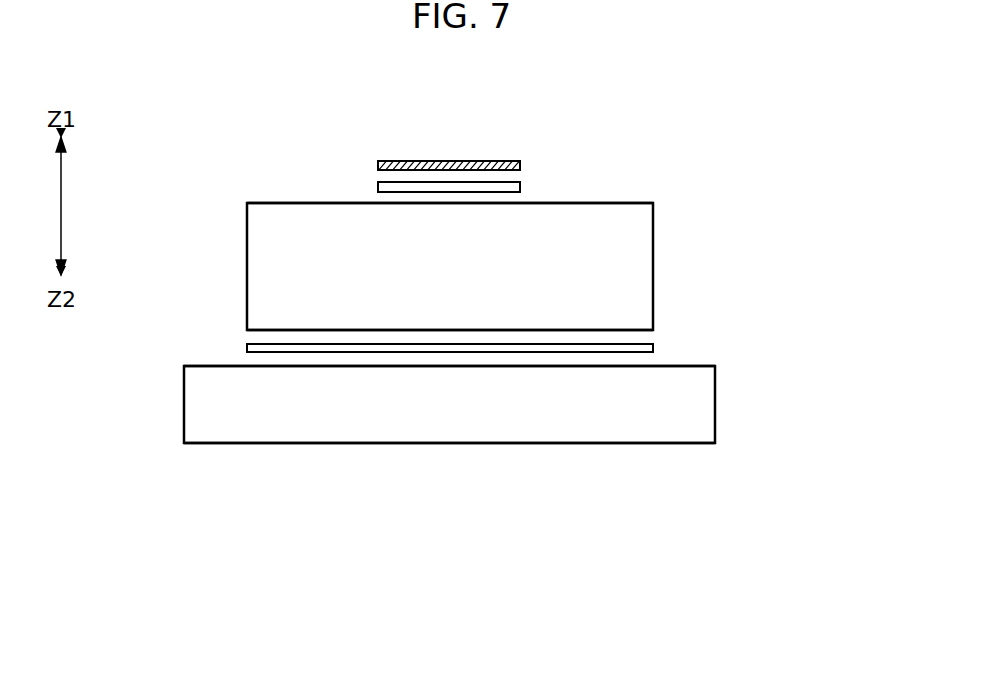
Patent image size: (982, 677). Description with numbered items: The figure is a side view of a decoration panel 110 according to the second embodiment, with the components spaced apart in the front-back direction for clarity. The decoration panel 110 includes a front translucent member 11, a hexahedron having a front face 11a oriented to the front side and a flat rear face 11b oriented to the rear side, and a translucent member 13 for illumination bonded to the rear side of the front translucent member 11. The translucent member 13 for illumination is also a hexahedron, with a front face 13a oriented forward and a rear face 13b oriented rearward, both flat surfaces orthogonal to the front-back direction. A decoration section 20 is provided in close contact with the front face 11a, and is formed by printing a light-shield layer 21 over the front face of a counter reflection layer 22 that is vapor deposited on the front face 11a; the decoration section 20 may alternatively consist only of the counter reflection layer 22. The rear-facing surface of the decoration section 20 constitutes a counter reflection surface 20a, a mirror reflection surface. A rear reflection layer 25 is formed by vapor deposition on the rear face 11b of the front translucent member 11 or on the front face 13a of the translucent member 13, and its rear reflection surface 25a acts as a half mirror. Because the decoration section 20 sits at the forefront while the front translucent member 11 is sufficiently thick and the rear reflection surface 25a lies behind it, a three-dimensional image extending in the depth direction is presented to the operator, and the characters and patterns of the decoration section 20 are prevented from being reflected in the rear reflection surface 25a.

The decoration panel 110 is at (738, 173).
The front translucent member 11 is at (653, 280).
The front face 11a is at (270, 203).
The rear face 11b is at (253, 330).
The decoration section 20 is at (535, 158).
The light-shield layer 21 is at (378, 165).
The counter reflection layer 22 is at (378, 187).
The counter reflection surface 20a is at (429, 193).
The rear reflection layer 25 is at (653, 347).
The rear reflection surface 25a is at (478, 343).
The translucent member for illumination 13 is at (715, 391).
The front face 13a is at (690, 366).
The rear face 13b is at (648, 443).